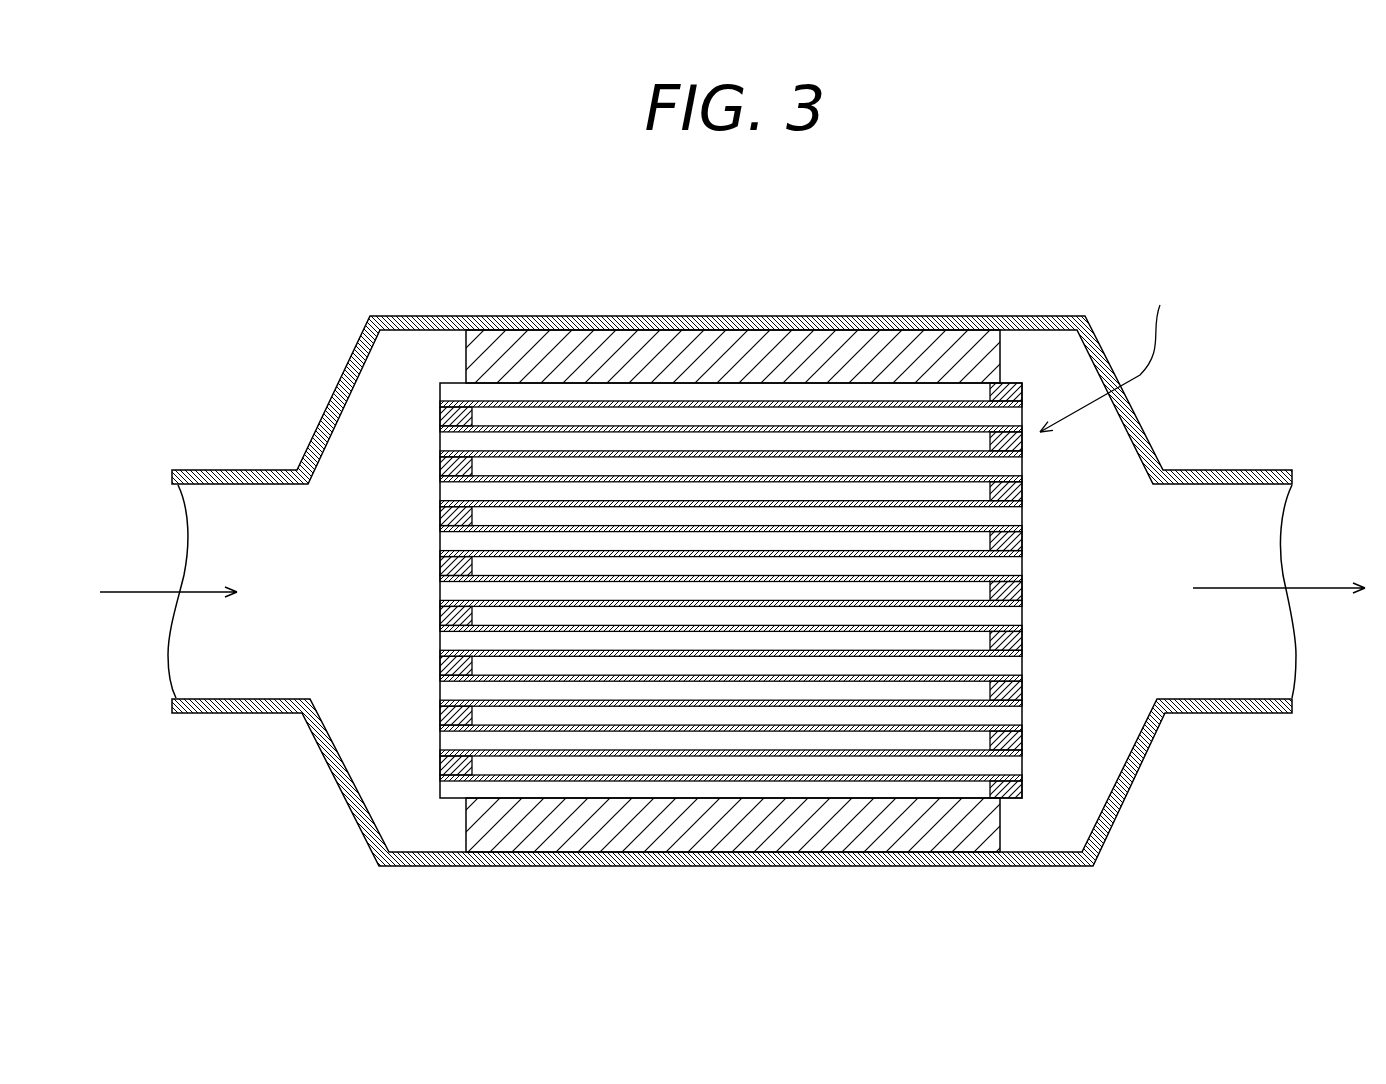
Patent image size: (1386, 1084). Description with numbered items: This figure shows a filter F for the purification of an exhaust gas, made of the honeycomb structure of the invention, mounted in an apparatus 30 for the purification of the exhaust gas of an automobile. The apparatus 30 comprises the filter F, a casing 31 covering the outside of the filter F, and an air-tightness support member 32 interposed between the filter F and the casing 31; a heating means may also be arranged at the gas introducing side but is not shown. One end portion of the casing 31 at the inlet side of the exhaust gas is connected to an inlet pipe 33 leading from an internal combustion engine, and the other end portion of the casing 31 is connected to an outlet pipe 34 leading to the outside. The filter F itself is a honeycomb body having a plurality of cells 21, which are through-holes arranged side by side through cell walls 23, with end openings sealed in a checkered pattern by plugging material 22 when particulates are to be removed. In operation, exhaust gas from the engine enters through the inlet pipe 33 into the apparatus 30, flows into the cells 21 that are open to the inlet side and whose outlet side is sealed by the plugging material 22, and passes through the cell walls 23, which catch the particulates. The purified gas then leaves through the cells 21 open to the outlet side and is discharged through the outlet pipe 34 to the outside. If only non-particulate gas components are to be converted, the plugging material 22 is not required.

The apparatus for the purification of the exhaust gas 30 is at (855, 270).
The casing 31 is at (766, 318).
The air-tightness support member 32 is at (550, 355).
The inlet pipe 33 is at (210, 518).
The outlet pipe 34 is at (1222, 525).
The cells 21 is at (450, 490).
The plugging material 22 is at (440, 414).
The cell walls 23 is at (680, 404).
The filter for the purification of the exhaust gas F is at (1184, 298).